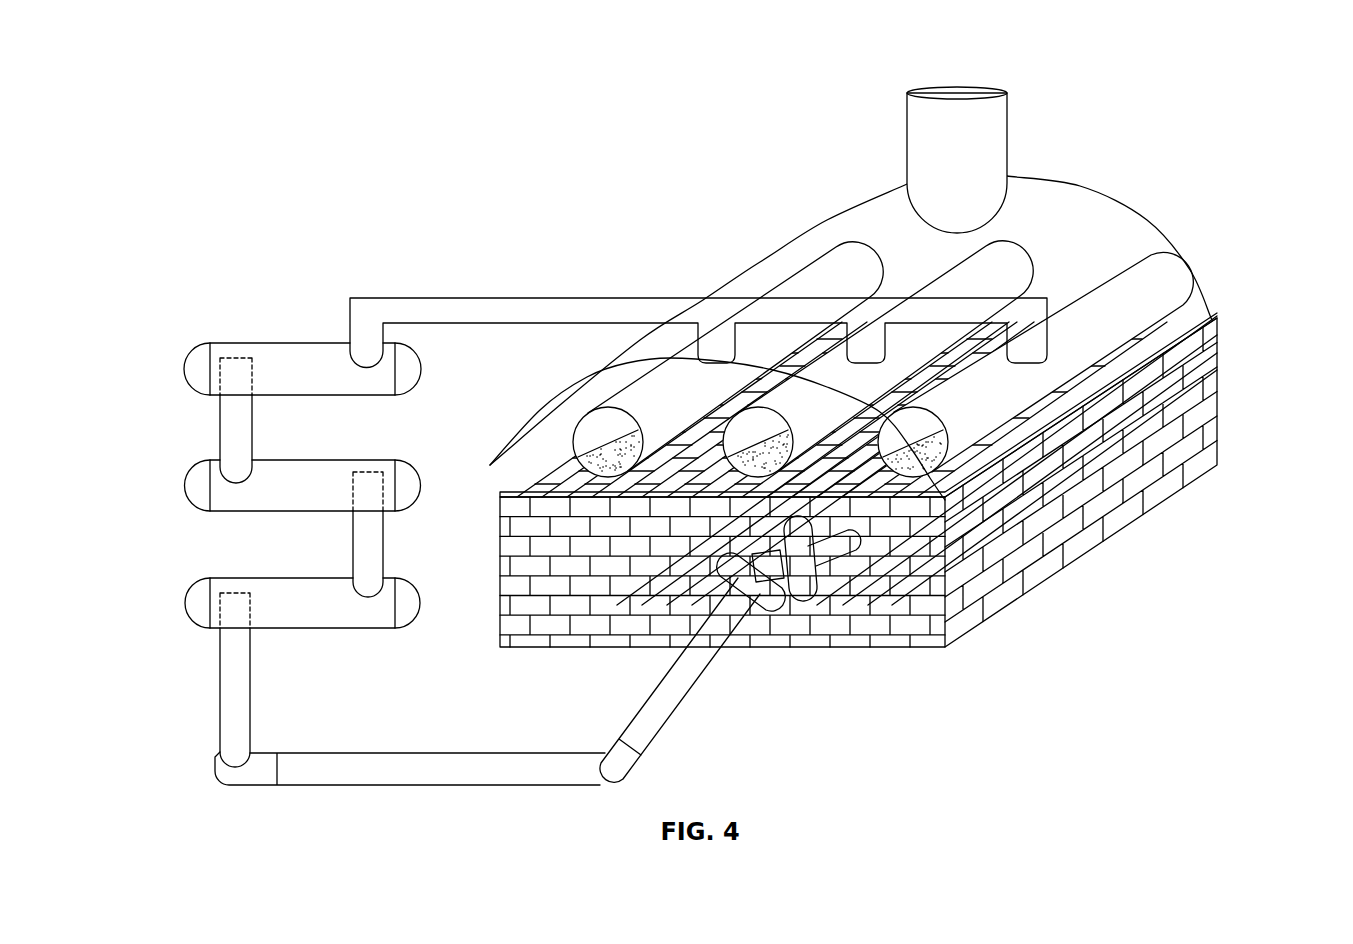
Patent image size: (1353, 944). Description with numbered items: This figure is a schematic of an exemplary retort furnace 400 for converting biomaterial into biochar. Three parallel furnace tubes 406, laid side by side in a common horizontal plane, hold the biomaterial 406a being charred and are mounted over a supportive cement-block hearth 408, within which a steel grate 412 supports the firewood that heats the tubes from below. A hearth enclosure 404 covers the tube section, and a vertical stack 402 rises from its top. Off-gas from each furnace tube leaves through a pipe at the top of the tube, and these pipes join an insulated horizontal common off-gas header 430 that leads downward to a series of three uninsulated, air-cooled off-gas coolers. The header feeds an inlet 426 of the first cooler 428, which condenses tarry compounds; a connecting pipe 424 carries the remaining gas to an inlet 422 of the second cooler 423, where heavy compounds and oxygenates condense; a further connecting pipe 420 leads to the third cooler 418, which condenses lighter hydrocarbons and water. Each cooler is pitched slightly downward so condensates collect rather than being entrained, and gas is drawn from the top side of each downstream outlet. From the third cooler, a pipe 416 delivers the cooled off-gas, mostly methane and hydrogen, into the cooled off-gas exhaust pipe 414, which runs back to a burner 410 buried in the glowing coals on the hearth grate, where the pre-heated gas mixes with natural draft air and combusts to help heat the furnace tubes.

The retort furnace 400 is at (396, 134).
The hopper 402 is at (980, 132).
The cover dome 404 is at (1067, 198).
The rollers 406 is at (1160, 280).
The material in rollers 406a is at (610, 447).
The refractory bed 408 is at (1187, 370).
The valve 410 is at (870, 568).
The conduits 412 is at (838, 647).
The supply pipe 414 is at (650, 769).
The connecting pipe 416 is at (235, 707).
The third tank 418 is at (230, 613).
The connecting pipe 420 is at (351, 539).
The inlet 422 is at (365, 488).
The second tank 423 is at (195, 480).
The connecting pipe 424 is at (238, 429).
The inlet 426 is at (230, 373).
The first tank 428 is at (293, 363).
The manifold 430 is at (510, 317).